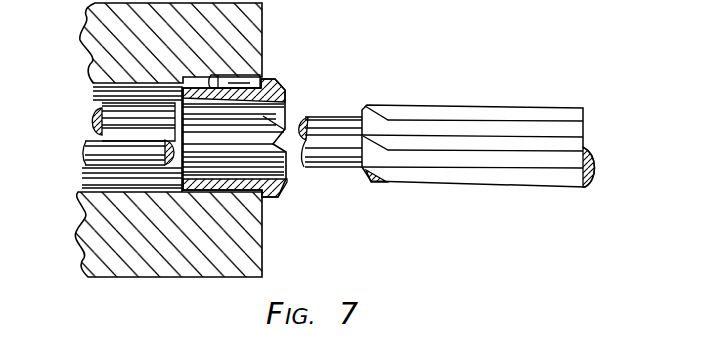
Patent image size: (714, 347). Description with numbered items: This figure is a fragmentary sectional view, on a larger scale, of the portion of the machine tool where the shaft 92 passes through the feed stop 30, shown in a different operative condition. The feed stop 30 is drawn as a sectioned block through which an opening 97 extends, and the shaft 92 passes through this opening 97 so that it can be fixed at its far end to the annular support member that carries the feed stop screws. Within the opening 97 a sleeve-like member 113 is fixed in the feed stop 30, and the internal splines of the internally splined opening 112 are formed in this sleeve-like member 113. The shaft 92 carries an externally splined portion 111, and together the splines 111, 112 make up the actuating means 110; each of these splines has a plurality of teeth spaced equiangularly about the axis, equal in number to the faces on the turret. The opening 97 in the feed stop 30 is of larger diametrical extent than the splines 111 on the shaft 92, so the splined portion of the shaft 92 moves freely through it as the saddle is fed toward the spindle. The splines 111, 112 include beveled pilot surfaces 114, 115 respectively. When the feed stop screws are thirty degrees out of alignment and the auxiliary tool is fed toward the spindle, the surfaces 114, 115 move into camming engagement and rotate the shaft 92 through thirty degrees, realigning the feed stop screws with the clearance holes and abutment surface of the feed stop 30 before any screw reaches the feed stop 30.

The feed stop member 30 is at (251, 37).
The opening 97 is at (92, 93).
The internally splined opening 112 is at (284, 110).
The shaft 92 is at (325, 117).
The actuating means 110 is at (478, 130).
The externally splined portion 111 is at (475, 117).
The beveled pilot surface 115 is at (287, 173).
The sleeve-like member 113 is at (283, 196).
The beveled pilot surface 114 is at (366, 176).